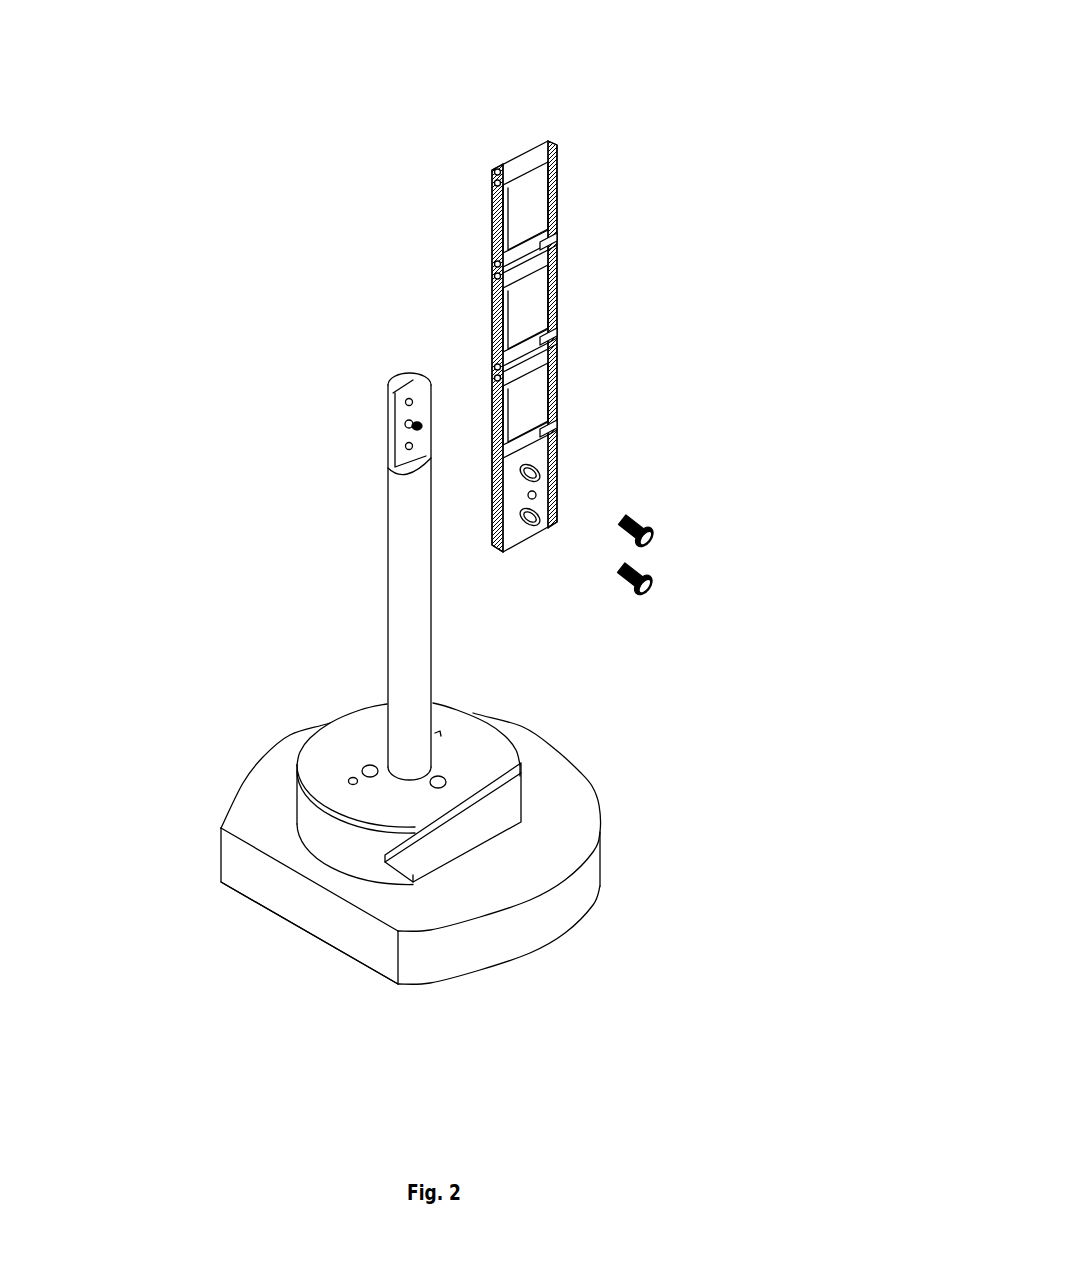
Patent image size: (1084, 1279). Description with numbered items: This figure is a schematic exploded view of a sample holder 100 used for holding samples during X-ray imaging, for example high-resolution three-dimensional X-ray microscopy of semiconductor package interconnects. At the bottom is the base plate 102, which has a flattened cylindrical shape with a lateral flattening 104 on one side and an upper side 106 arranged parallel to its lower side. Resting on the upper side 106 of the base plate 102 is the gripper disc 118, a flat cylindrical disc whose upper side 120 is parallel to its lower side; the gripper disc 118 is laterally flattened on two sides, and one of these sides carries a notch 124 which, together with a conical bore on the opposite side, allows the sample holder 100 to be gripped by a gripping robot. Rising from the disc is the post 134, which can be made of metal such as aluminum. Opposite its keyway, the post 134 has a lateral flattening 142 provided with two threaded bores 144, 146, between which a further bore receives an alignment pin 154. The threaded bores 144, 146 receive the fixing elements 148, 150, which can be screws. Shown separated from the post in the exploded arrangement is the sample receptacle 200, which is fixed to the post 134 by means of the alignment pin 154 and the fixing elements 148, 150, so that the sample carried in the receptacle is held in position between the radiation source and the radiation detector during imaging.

The sample holder 100 is at (368, 80).
The base plate 102 is at (466, 881).
The lateral flattening 104 is at (342, 930).
The upper side 106 is at (568, 838).
The gripper disc 118 is at (414, 751).
The upper side 120 is at (323, 745).
The notch 124 is at (438, 843).
The post 134 is at (452, 550).
The lateral flattening 142 is at (432, 411).
The threaded bore 144 is at (400, 458).
The threaded bore 146 is at (396, 378).
The fixing element 148 is at (650, 528).
The fixing element 150 is at (655, 578).
The alignment pin 154 is at (432, 421).
The sample receptacle 200 is at (558, 162).